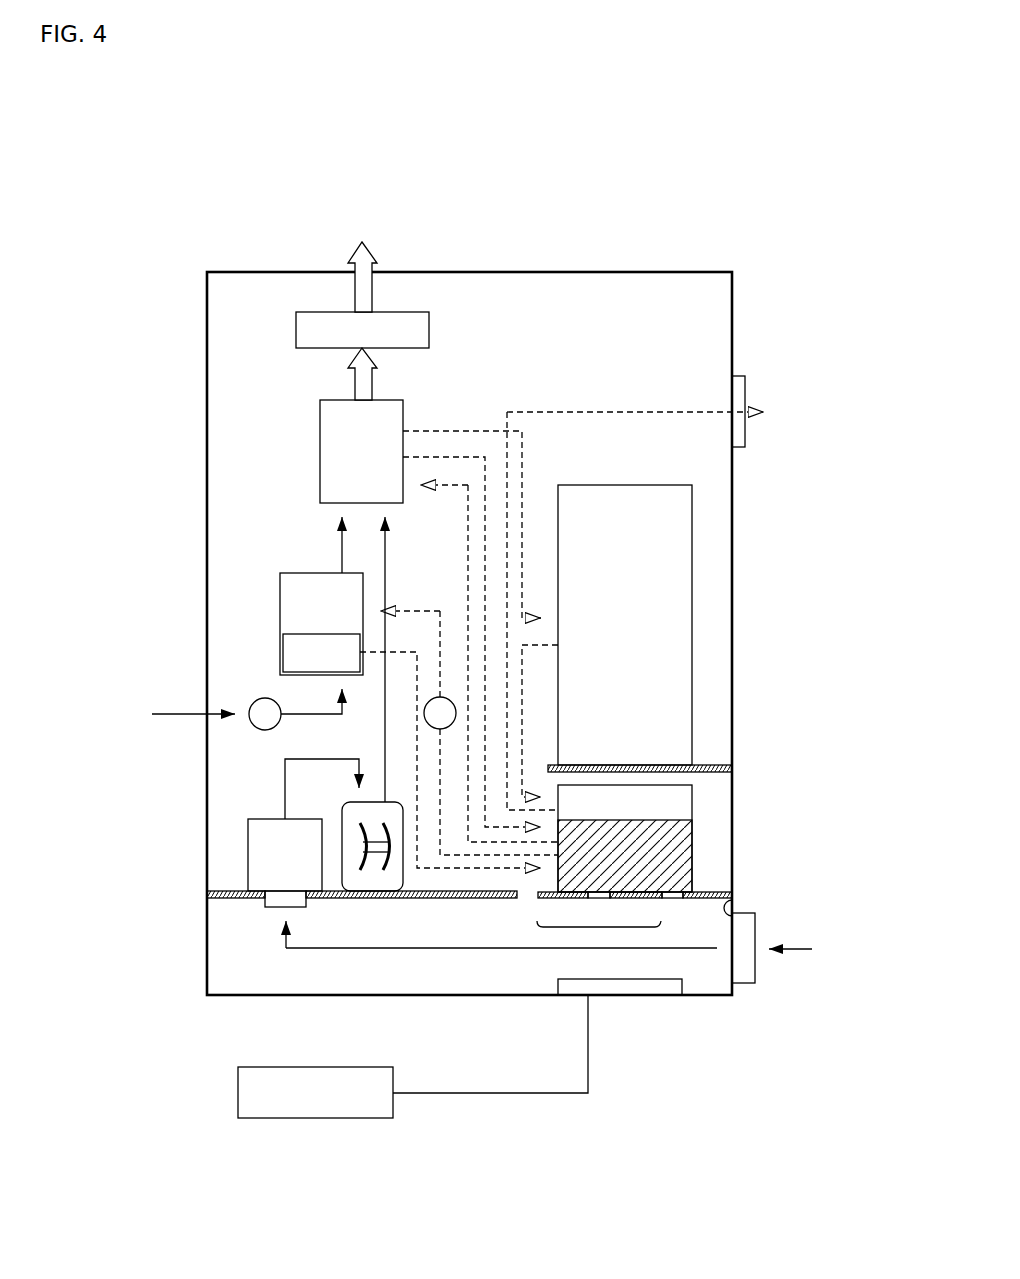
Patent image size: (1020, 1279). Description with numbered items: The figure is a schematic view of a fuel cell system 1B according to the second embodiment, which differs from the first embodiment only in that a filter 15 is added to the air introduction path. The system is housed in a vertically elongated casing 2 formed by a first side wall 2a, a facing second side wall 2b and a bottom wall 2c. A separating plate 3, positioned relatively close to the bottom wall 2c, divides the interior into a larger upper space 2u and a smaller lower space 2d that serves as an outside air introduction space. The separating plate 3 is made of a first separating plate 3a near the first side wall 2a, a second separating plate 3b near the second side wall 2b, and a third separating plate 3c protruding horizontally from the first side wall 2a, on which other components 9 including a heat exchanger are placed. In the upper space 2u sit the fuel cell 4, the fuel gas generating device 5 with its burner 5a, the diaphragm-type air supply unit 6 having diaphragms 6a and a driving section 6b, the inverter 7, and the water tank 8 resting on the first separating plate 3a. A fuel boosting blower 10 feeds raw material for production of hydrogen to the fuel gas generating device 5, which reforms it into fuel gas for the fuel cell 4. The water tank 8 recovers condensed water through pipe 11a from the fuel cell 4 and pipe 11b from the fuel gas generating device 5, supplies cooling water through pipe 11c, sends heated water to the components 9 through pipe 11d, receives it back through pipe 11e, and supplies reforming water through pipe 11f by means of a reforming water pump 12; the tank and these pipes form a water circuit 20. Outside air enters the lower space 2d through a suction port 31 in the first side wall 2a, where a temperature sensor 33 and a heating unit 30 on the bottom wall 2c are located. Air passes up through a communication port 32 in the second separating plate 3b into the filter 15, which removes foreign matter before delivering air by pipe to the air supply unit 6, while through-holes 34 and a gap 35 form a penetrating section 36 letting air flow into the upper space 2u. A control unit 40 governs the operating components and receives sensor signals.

The fuel cell system 1B is at (663, 234).
The casing 2 is at (553, 272).
The upper space 2u is at (252, 309).
The first side wall 2a is at (732, 612).
The second side wall 2b is at (207, 612).
The bottom wall 2c is at (470, 995).
The lower space (outside air introduction space) 2d is at (250, 933).
The separating plate 3 is at (472, 812).
The first separating plate 3a is at (716, 890).
The second separating plate 3b is at (220, 890).
The third separating plate 3c is at (716, 763).
The fuel cell 4 is at (320, 429).
The fuel gas generating device 5 is at (280, 585).
The burner 5a is at (283, 646).
The air supply unit 6 is at (364, 812).
The diaphragms 6a is at (353, 827).
The driving section 6b is at (373, 840).
The inverter 7 is at (296, 330).
The water tank 8 is at (692, 798).
The other components 9 is at (692, 710).
The fuel boosting blower 10 is at (183, 688).
The pipe 11a is at (440, 457).
The pipe 11b is at (428, 645).
The pipe 11c is at (468, 505).
The pipe 11d is at (470, 431).
The pipe 11e is at (522, 712).
The pipe 11f is at (400, 611).
The reforming water pump 12 is at (440, 713).
The filter 15 is at (263, 819).
The water circuit 20 is at (473, 404).
The heating unit 30 is at (647, 995).
The suction port 31 is at (755, 975).
The communication port 32 is at (304, 905).
The temperature sensor 33 is at (738, 901).
The through-holes 34 is at (598, 902).
The gap 35 is at (535, 898).
The penetrating section 36 is at (602, 930).
The control unit 40 is at (312, 1067).